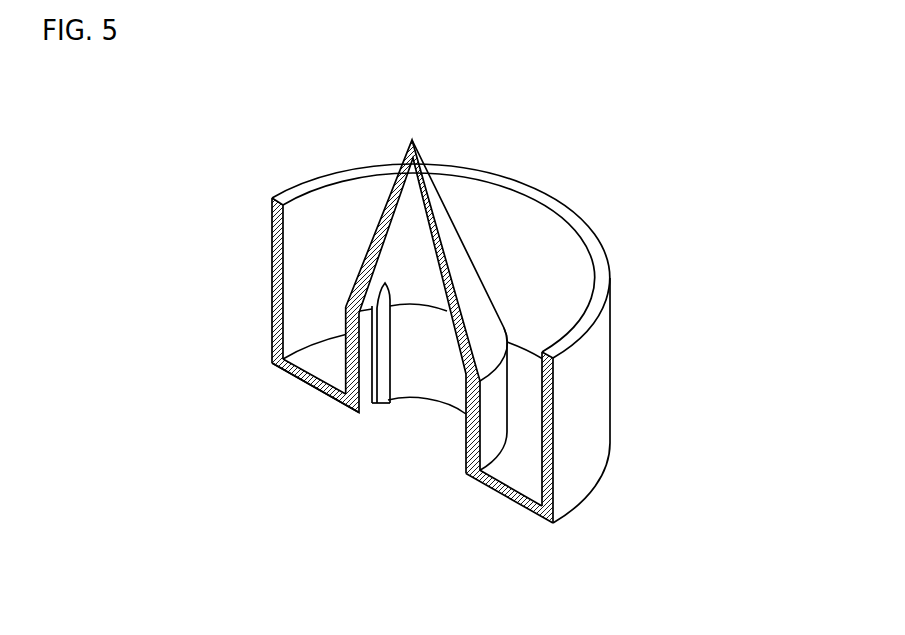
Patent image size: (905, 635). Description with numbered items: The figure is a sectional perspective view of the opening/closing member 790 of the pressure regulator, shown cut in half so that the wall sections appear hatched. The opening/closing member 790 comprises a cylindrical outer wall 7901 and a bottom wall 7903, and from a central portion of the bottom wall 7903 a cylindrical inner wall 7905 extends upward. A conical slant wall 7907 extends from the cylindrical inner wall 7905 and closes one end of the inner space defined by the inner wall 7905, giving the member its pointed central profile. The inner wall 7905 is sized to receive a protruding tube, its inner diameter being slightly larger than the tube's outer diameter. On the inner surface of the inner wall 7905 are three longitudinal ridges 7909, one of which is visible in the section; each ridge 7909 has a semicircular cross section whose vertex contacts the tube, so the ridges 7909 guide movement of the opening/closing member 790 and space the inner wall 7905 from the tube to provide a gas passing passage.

The opening/closing member 790 is at (645, 231).
The cylindrical outer wall 7901 is at (598, 411).
The bottom wall 7903 is at (513, 504).
The cylindrical inner wall 7905 is at (466, 446).
The conical slant wall 7907 is at (455, 248).
The ridge 7909 is at (388, 388).